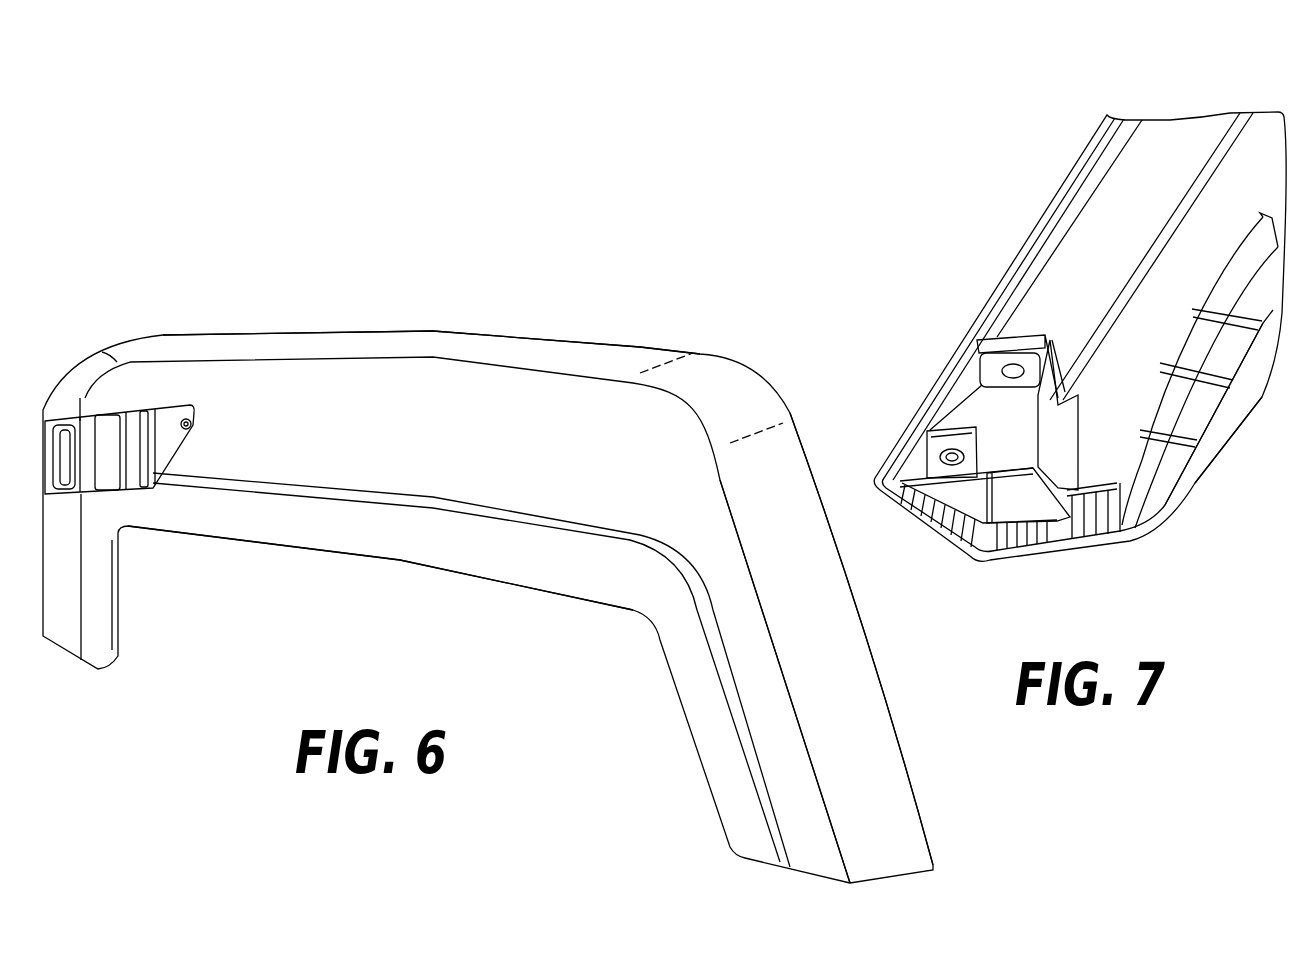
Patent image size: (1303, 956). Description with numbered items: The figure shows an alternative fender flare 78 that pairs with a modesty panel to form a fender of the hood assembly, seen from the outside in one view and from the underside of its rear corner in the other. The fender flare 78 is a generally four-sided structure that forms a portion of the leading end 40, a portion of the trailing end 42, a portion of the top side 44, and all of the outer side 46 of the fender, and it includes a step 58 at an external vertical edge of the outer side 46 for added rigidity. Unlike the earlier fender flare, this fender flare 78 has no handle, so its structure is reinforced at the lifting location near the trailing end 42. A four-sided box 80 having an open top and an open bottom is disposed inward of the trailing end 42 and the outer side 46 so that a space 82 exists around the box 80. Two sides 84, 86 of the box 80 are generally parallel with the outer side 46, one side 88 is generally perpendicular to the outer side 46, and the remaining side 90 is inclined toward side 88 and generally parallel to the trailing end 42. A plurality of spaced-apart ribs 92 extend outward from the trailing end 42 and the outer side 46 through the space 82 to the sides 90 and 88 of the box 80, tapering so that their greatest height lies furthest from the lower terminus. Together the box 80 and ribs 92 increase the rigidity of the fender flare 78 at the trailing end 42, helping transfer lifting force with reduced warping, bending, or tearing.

In FIG. 6, the fender flare 78 is at (515, 150).
In FIG. 7, the fender flare 78 is at (1014, 98).
In FIG. 6, the leading end 40 is at (73, 395).
In FIG. 6, the trailing end 42 is at (910, 847).
In FIG. 7, the trailing end 42 is at (1158, 549).
In FIG. 6, the top side 44 is at (503, 350).
In FIG. 6, the outer side 46 is at (440, 385).
In FIG. 6, the step 58 is at (375, 527).
In FIG. 7, the step 58 is at (1197, 460).
In FIG. 7, the four-sided box 80 is at (1099, 450).
In FIG. 7, the space 82 is at (977, 547).
In FIG. 7, the side of box 84 is at (1072, 545).
In FIG. 7, the side of box 86 is at (995, 347).
In FIG. 7, the side of box 88 is at (1073, 397).
In FIG. 7, the side of box 90 is at (957, 495).
In FIG. 7, the ribs 92 is at (938, 535).